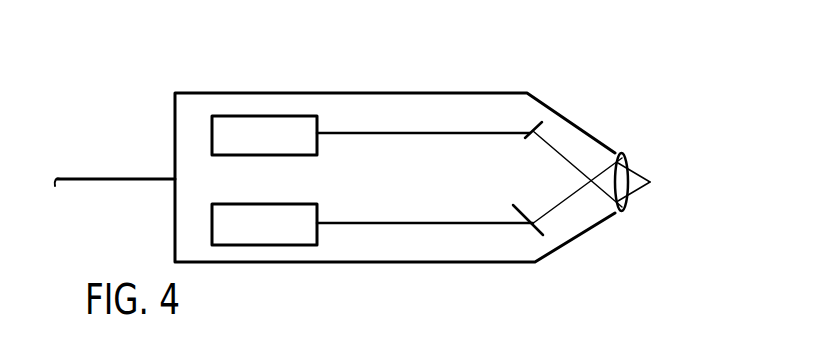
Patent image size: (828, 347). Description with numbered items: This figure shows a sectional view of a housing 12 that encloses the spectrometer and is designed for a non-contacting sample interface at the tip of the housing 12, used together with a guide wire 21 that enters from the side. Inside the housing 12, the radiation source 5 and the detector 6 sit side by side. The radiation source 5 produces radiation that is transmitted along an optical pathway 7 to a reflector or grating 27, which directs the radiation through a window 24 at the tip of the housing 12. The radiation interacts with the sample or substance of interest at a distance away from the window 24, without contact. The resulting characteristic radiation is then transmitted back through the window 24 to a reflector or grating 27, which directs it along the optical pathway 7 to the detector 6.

The housing 12 is at (548, 113).
The detector 6 is at (266, 144).
The radiation source 5 is at (266, 234).
The optical pathway 7 is at (391, 134).
The guide wire 21 is at (80, 178).
The reflector or grating 27 is at (516, 141).
The window 24 is at (627, 159).